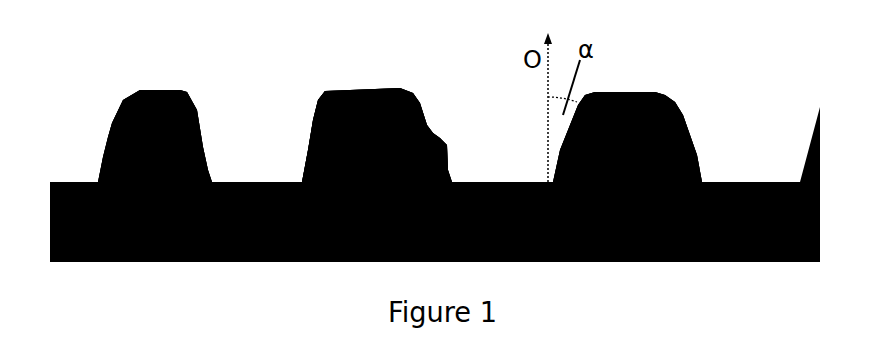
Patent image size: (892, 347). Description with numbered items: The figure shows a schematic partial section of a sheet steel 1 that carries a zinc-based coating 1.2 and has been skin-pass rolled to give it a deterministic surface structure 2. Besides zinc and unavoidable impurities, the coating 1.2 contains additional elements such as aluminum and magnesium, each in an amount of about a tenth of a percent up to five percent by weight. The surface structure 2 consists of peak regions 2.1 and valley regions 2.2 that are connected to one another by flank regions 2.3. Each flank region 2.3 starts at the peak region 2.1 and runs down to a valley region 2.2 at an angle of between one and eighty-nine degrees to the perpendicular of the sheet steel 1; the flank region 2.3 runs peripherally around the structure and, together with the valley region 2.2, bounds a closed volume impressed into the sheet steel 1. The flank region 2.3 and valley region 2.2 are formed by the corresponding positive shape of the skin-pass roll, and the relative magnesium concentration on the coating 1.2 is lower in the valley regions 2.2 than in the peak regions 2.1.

The sheet steel 1 is at (292, 66).
The surface structure 2 is at (400, 135).
The peak region 2.1 is at (168, 90).
The valley region 2.2 is at (513, 182).
The flank region 2.3 is at (313, 120).
The zinc-based coating 1.2 is at (728, 182).